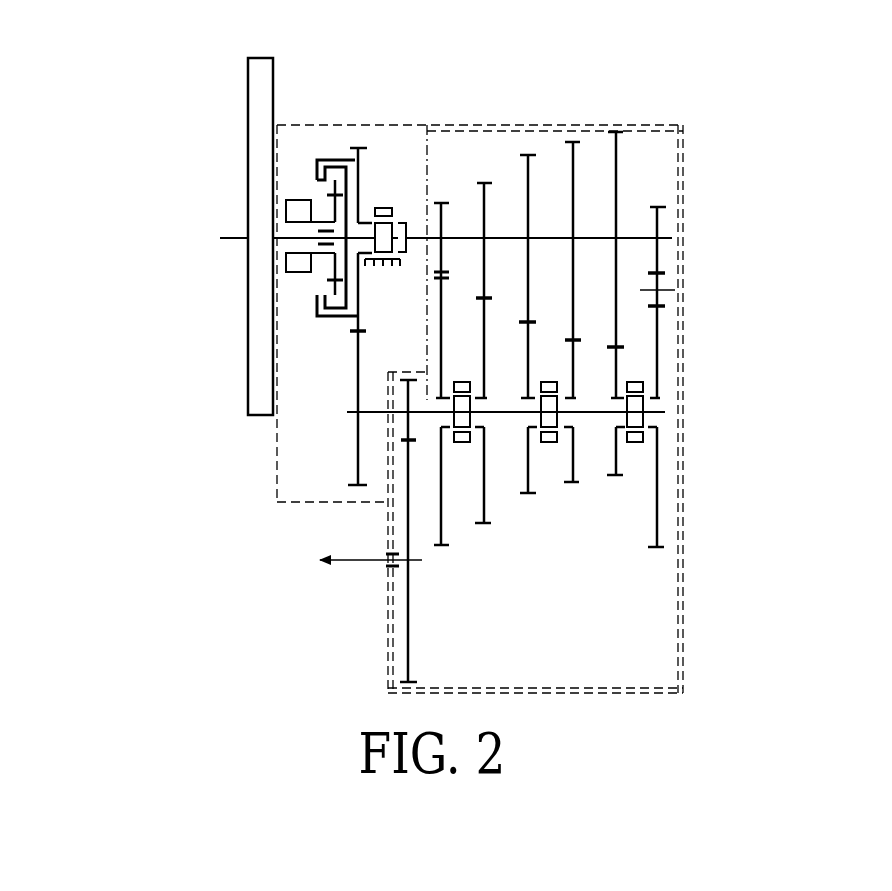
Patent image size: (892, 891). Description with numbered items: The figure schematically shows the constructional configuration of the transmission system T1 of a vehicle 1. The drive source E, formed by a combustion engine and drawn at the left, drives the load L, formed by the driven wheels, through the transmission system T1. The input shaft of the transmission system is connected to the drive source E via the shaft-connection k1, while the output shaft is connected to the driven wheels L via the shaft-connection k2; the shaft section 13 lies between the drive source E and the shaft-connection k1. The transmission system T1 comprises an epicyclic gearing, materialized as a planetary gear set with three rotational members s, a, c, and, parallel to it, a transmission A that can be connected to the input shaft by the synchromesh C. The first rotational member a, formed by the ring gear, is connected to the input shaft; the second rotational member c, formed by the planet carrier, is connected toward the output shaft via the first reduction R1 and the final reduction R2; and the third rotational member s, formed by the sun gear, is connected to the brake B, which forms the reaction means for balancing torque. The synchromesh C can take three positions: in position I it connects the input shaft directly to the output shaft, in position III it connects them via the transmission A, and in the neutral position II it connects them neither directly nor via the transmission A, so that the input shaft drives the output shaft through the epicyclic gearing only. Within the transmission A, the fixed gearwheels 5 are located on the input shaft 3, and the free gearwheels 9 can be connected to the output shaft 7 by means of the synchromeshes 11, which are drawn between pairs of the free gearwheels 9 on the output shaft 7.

The vehicle 1 is at (193, 148).
The input shaft of the transmission A 3 is at (672, 240).
The fixed gearwheels 5 is at (572, 180).
The output shaft of the transmission A 7 is at (665, 414).
The free gearwheels 9 is at (525, 482).
The synchromeshes 11 is at (468, 441).
The drive shaft section 13 is at (288, 240).
The transmission A is at (427, 140).
The brake B is at (298, 210).
The synchromesh C is at (387, 208).
The drive source E is at (257, 370).
The load L is at (354, 560).
The first reduction R1 is at (356, 334).
The final reduction R2 is at (407, 445).
The transmission system T1 is at (277, 473).
The first rotational member a is at (348, 193).
The second rotational member c is at (362, 166).
The third rotational member s is at (334, 219).
The shaft-connection k1 is at (327, 245).
The shaft-connection k2 is at (392, 567).
The position I is at (372, 268).
The neutral position II is at (384, 267).
The position III is at (398, 268).